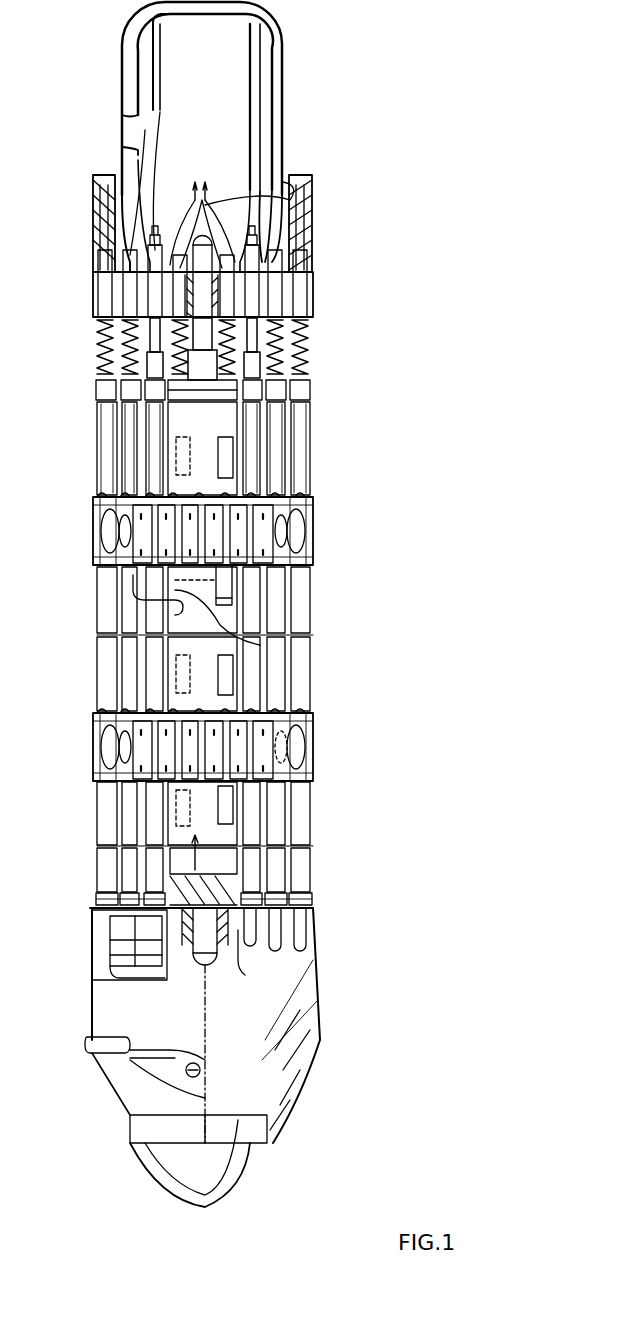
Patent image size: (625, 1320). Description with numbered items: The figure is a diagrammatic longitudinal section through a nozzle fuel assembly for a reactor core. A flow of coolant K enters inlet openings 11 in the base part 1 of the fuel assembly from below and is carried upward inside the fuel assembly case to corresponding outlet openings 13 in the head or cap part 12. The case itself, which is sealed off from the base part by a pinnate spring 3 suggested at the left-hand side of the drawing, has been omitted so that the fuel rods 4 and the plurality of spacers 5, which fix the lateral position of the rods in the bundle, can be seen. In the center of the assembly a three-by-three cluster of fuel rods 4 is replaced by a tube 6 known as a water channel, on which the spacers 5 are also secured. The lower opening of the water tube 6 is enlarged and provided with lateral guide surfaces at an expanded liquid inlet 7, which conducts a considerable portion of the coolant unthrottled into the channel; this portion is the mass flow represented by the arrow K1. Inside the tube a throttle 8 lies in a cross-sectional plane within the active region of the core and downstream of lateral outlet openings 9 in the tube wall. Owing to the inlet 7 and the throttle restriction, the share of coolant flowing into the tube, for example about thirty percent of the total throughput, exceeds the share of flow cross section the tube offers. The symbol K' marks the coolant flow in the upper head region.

The base part 1 is at (115, 1088).
The pinnate spring 3 is at (115, 930).
The fuel rods 4 is at (97, 455).
The spacers 5 is at (113, 757).
The tube (water channel) 6 is at (185, 610).
The expanded liquid inlet 7 is at (230, 890).
The throttle 8 is at (215, 580).
The lateral outlet openings 9 is at (175, 592).
The inlet openings 11 is at (240, 960).
The head or cap part 12 is at (312, 296).
The outlet openings 13 is at (170, 298).
The flow of coolant K is at (202, 1025).
The mass flow into the tube K1 is at (190, 858).
The handle region K' is at (214, 137).